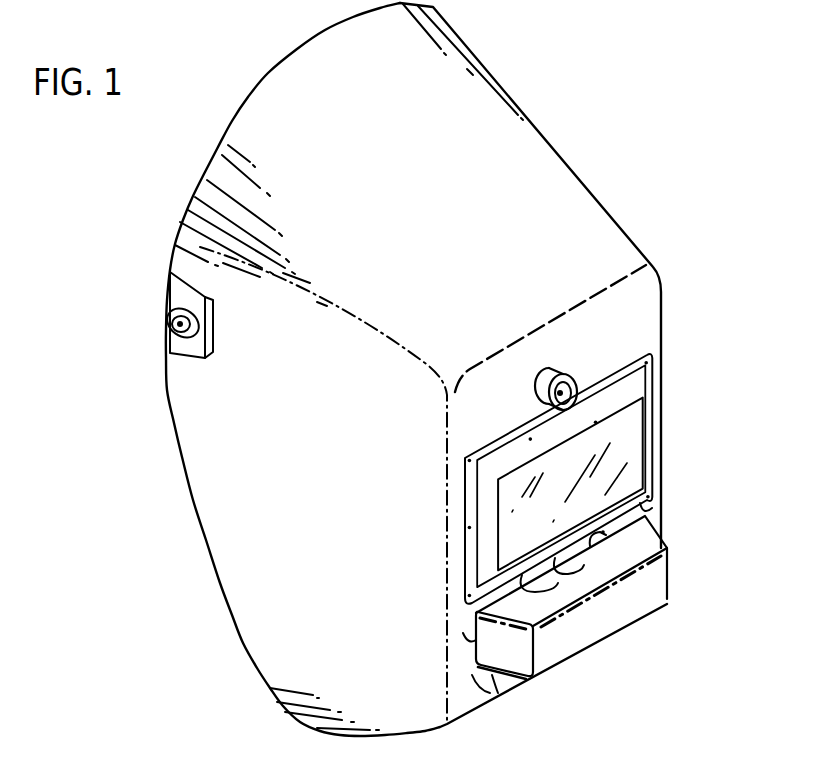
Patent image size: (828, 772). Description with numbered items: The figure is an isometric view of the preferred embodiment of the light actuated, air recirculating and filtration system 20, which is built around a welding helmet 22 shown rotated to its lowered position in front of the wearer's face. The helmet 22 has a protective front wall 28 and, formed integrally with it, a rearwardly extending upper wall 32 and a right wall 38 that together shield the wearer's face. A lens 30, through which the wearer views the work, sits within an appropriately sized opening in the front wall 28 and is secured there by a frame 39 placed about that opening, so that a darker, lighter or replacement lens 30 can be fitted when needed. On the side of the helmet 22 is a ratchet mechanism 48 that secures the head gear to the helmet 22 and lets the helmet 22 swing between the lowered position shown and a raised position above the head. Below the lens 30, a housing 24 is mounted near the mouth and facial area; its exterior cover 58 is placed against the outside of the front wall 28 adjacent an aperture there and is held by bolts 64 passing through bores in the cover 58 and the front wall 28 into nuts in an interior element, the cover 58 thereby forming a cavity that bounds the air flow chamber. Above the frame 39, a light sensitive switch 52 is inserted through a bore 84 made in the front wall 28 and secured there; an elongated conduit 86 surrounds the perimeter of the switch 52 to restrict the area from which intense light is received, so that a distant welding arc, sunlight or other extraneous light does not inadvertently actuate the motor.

The light actuated, air recirculating and filtration system 20 is at (447, 369).
The welding helmet 22 is at (672, 287).
The housing 24 is at (607, 597).
The front wall 28 is at (645, 327).
The lens 30 is at (637, 432).
The upper wall 32 is at (537, 164).
The right wall 38 is at (238, 574).
The frame 39 is at (643, 382).
The ratchet mechanism 48 is at (172, 318).
The light sensitive switch 52 is at (542, 352).
The exterior cover 58 is at (600, 627).
The bolts 64 is at (458, 632).
The bore 84 is at (570, 375).
The elongated conduit 86 is at (549, 368).